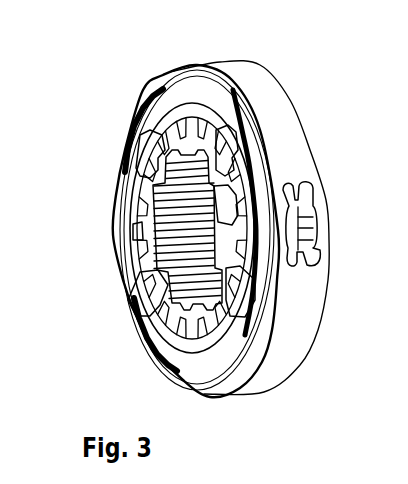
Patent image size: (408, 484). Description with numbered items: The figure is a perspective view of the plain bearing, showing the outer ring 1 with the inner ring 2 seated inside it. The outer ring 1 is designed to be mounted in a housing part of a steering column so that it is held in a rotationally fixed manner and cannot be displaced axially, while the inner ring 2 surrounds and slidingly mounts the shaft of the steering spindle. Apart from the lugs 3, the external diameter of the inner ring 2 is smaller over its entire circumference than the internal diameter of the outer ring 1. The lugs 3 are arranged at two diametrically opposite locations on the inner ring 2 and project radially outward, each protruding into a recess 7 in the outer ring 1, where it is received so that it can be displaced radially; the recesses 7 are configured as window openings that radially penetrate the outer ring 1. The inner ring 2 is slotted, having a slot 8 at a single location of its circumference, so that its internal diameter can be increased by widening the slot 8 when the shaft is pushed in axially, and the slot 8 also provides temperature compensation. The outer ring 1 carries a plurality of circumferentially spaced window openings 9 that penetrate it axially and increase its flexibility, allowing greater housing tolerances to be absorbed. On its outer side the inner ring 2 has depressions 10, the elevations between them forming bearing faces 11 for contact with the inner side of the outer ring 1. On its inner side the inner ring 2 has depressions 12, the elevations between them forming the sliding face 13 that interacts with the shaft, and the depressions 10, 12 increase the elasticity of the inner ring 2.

The outer ring 1 is at (205, 375).
The inner ring 2 is at (176, 130).
The lug 3 is at (318, 187).
The recess 7 is at (312, 232).
The slot 8 is at (260, 348).
The window opening 9 is at (138, 123).
The depression 10 is at (132, 230).
The bearing face 11 is at (220, 72).
The depression 12 is at (188, 258).
The sliding face 13 is at (160, 290).